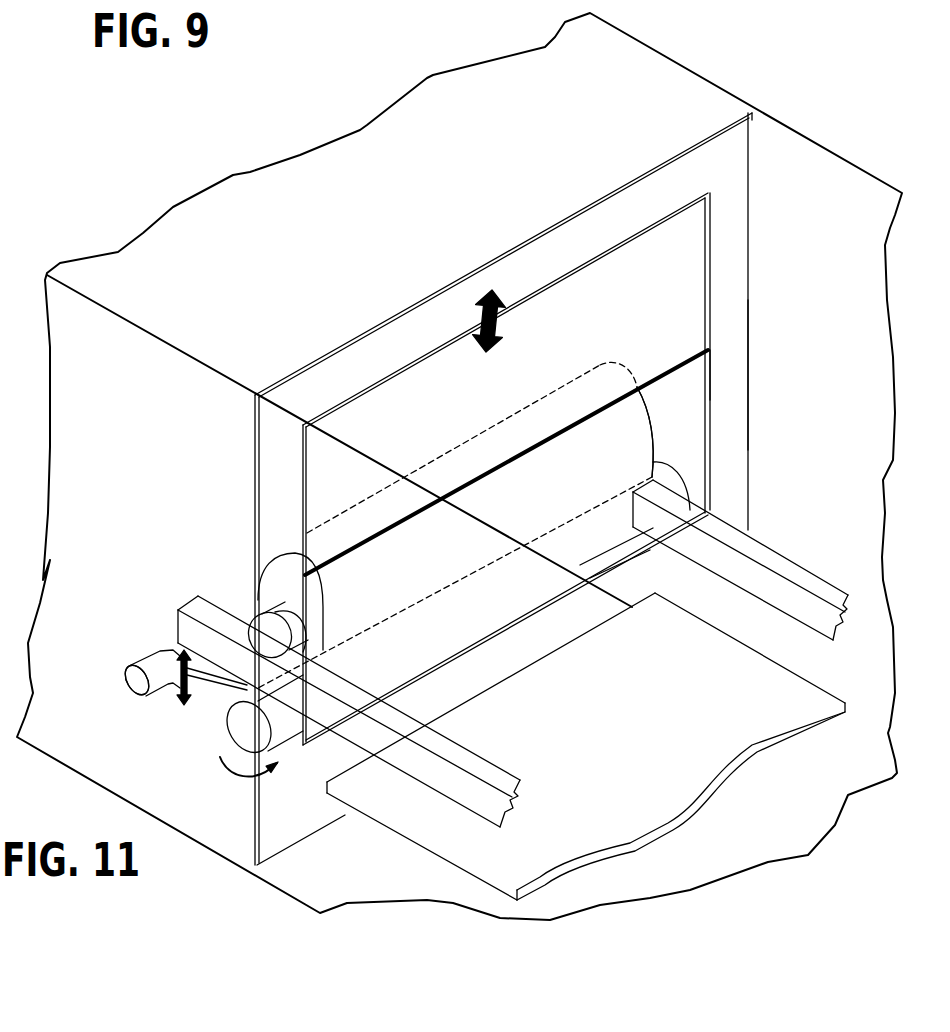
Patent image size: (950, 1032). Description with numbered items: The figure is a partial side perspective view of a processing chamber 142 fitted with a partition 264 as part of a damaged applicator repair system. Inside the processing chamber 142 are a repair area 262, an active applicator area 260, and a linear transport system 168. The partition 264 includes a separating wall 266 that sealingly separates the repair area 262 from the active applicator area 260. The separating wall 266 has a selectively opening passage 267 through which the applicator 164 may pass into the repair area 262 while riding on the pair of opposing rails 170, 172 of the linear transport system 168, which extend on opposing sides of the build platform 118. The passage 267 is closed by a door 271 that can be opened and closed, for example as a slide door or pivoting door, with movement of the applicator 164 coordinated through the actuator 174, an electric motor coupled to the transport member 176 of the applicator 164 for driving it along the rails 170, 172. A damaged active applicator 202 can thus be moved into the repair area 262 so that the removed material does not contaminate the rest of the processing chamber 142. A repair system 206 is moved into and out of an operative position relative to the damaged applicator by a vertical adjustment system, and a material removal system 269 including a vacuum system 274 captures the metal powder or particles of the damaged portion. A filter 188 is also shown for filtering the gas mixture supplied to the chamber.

The build platform 118 is at (710, 733).
The processing chamber 142 is at (792, 128).
The applicator 164 is at (270, 551).
The linear transport system 168 is at (821, 558).
The rail 170 is at (770, 560).
The rail 172 is at (452, 753).
The actuator 174 is at (266, 634).
The transport member 176 is at (273, 593).
The filter 188 is at (177, 653).
The damaged active applicator 202 is at (270, 551).
The repair system 206 is at (262, 768).
The active applicator area 260 is at (820, 389).
The repair area 262 is at (115, 512).
The partition 264 is at (700, 160).
The separating wall 266 is at (597, 251).
The selectively opening passage 267 is at (688, 397).
The material removal system 269 is at (140, 688).
The door 271 is at (618, 337).
The vacuum system 274 is at (140, 688).